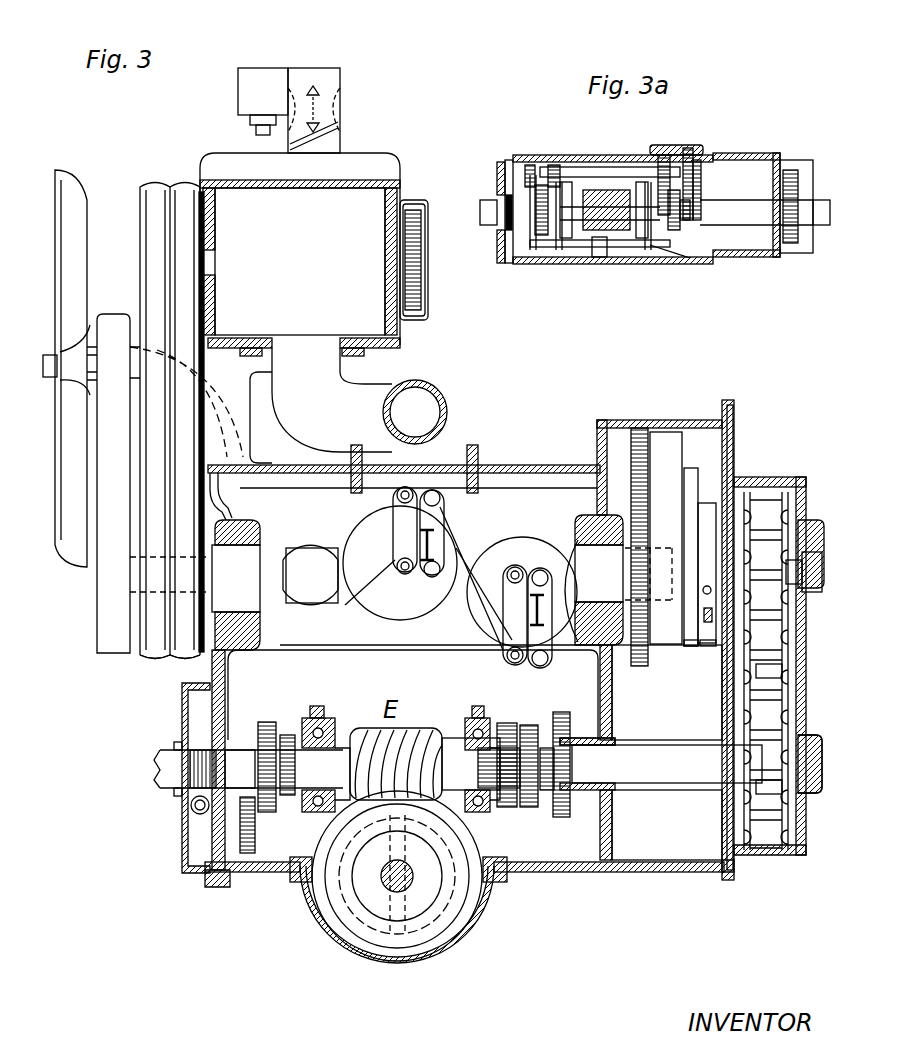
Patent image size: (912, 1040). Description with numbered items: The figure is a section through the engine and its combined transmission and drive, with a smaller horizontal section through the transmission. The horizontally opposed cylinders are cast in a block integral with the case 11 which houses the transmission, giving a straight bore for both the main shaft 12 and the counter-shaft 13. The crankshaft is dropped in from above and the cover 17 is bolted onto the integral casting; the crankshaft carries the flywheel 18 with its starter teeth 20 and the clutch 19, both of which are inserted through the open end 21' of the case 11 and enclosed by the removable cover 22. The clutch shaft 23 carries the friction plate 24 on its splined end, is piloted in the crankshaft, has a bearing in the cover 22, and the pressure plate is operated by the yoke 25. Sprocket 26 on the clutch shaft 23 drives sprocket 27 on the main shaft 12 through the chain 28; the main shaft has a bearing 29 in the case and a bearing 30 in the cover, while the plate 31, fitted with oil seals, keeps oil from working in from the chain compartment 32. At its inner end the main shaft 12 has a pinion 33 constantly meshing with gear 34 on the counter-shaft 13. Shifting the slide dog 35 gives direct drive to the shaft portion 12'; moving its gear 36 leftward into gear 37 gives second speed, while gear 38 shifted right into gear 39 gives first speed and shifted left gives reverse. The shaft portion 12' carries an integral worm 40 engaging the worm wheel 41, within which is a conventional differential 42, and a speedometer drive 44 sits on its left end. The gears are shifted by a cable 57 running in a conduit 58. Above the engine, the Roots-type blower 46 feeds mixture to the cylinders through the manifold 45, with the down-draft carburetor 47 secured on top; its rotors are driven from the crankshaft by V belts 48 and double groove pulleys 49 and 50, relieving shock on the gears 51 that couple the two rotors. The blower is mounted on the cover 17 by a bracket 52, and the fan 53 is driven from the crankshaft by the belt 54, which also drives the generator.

In FIG. 3, the case 11 is at (577, 872).
In FIG. 3, the main shaft 12 is at (667, 752).
In FIG. 3, the shaft portion 12' is at (474, 731).
In FIG. 3A, the counter-shaft 13 is at (597, 170).
In FIG. 3, the cover 17 is at (518, 462).
In FIG. 3, the flywheel 18 is at (660, 432).
In FIG. 3, the clutch 19 is at (690, 470).
In FIG. 3, the starter teeth 20 is at (637, 428).
In FIG. 3, the open end 21' is at (755, 883).
In FIG. 3, the removable cover 22 is at (737, 455).
In FIG. 3, the shaft 23 is at (800, 555).
In FIG. 3, the friction plate 24 is at (718, 648).
In FIG. 3, the yoke 25 is at (712, 660).
In FIG. 3, the sprocket 26 is at (782, 592).
In FIG. 3, the sprocket 27 is at (780, 796).
In FIG. 3, the chain 28 is at (782, 671).
In FIG. 3, the bearing 29 is at (614, 745).
In FIG. 3, the bearing 30 is at (806, 745).
In FIG. 3, the plate 31 is at (727, 815).
In FIG. 3, the compartment 32 is at (762, 835).
In FIG. 3, the pinion 33 is at (578, 768).
In FIG. 3A, the pinion 33 is at (690, 220).
In FIG. 3, the gear 34 is at (563, 712).
In FIG. 3A, the gear 34 is at (697, 195).
In FIG. 3, the slide dog 35 is at (521, 790).
In FIG. 3A, the slide dog 35 is at (675, 230).
In FIG. 3, the gear 36 is at (542, 805).
In FIG. 3A, the gear 36 is at (683, 222).
In FIG. 3, the gear 37 is at (502, 723).
In FIG. 3A, the gear 37 is at (663, 195).
In FIG. 3, the gear 38 is at (262, 722).
In FIG. 3A, the gear 38 is at (543, 234).
In FIG. 3, the gear 39 is at (292, 735).
In FIG. 3A, the gear 39 is at (552, 188).
In FIG. 3, the worm 40 is at (380, 730).
In FIG. 3A, the worm 40 is at (590, 222).
In FIG. 3, the worm wheel 41 is at (455, 928).
In FIG. 3, the differential 42 is at (398, 915).
In FIG. 3, the speedometer drive 44 is at (190, 775).
In FIG. 3A, the speedometer drive 44 is at (508, 228).
In FIG. 3, the manifold 45 is at (359, 400).
In FIG. 3, the blower 46 is at (375, 172).
In FIG. 3, the carburetor 47 is at (322, 90).
In FIG. 3, the V belts 48 is at (180, 200).
In FIG. 3, the double groove pulley 49 is at (145, 650).
In FIG. 3, the double groove pulley 50 is at (138, 205).
In FIG. 3, the gears 51 is at (430, 234).
In FIG. 3, the bracket 52 is at (240, 414).
In FIG. 3, the fan 53 is at (76, 527).
In FIG. 3, the belt 54 is at (112, 322).
In FIG. 3A, the cable 57 is at (692, 258).
In FIG. 3A, the conduit 58 is at (610, 254).